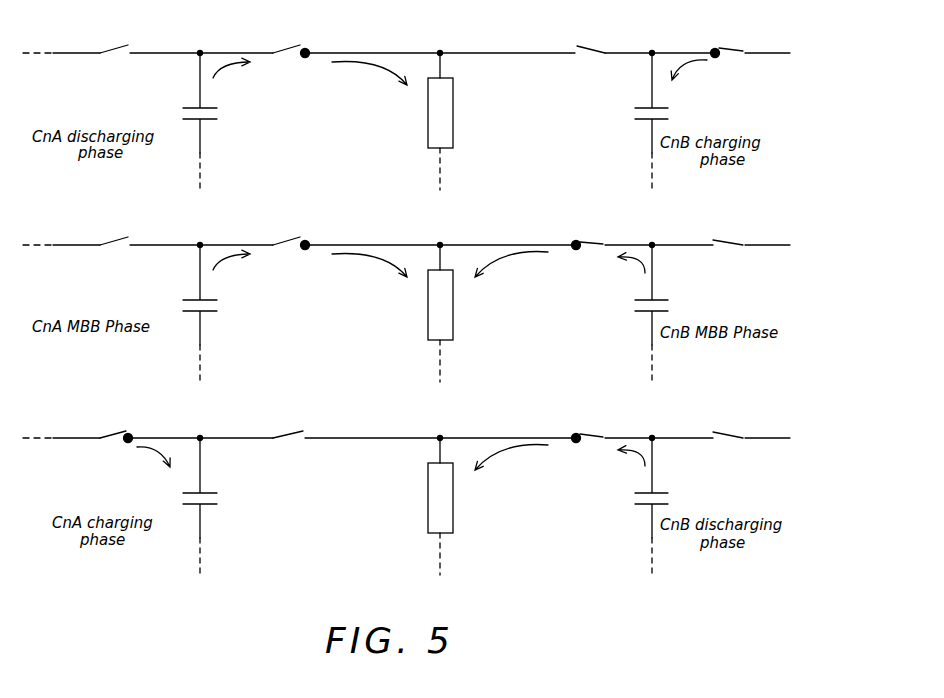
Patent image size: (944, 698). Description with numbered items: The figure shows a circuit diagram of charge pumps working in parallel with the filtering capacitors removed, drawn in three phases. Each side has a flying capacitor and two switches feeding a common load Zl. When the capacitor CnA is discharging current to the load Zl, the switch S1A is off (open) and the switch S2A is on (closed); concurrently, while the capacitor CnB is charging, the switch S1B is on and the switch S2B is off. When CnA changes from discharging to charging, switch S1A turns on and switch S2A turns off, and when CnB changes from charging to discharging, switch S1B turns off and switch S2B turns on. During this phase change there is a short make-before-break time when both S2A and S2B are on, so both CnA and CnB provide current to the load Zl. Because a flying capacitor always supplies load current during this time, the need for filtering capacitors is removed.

The switch S1A is at (111, 237).
The switch S2A is at (288, 234).
The switch S2B is at (599, 235).
The switch S1B is at (734, 231).
The capacitor CnA is at (220, 314).
The capacitor CnB is at (672, 314).
The load Zl is at (451, 314).